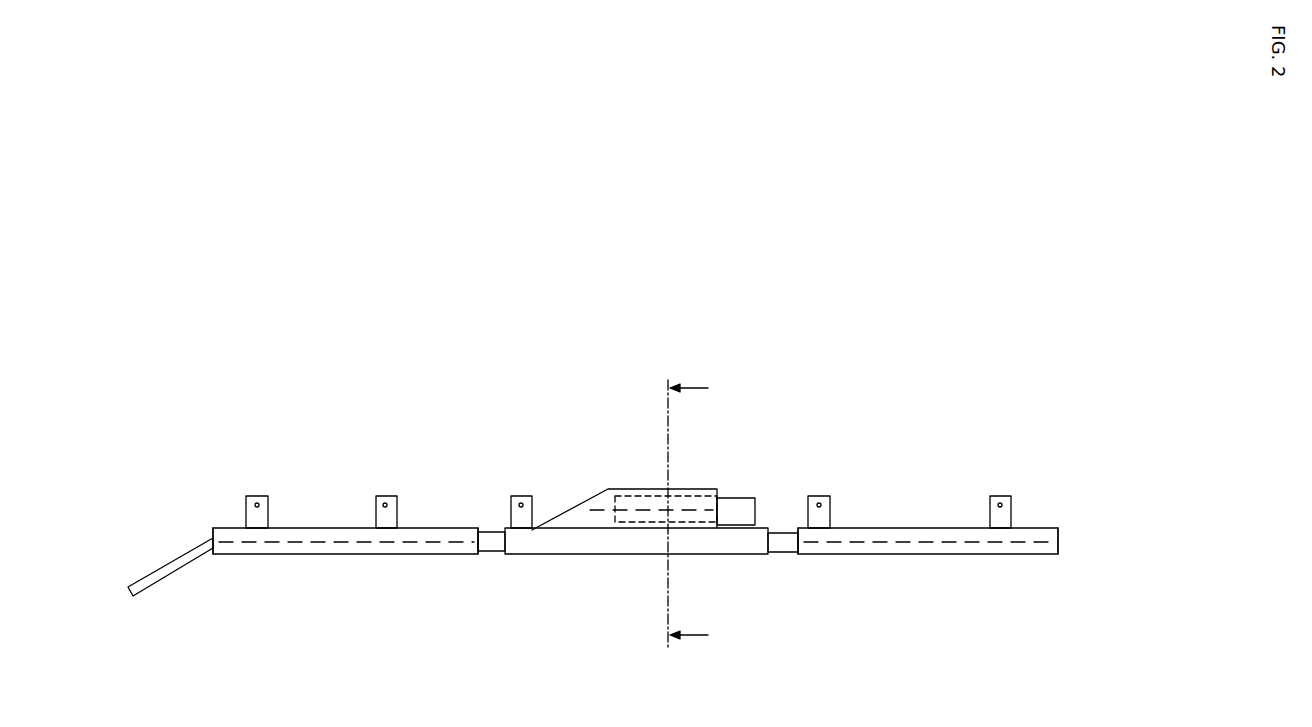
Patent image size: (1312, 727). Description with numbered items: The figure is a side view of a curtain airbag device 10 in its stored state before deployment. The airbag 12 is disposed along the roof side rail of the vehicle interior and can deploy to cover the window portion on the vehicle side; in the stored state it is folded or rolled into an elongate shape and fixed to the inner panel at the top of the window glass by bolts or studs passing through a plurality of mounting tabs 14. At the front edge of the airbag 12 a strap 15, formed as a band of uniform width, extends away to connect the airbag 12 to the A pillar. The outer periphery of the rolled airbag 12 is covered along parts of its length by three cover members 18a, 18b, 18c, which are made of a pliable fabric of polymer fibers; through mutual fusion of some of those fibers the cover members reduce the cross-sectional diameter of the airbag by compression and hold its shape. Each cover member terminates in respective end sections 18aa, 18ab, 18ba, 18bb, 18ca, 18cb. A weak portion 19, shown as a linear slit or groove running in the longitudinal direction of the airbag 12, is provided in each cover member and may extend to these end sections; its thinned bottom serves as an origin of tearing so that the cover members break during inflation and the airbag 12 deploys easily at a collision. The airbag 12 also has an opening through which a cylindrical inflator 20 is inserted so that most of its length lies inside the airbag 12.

The curtain airbag device 10 is at (872, 378).
The airbag 12 is at (785, 553).
The mounting tab 14 is at (390, 495).
The strap 15 is at (163, 563).
The cover member 18a is at (368, 555).
The end section of cover member 18aa is at (215, 545).
The end section of cover member 18ab is at (473, 542).
The cover member 18b is at (612, 555).
The end section of cover member 18ba is at (562, 513).
The end section of cover member 18bb is at (725, 495).
The cover member 18c is at (968, 558).
The end section of cover member 18ca is at (800, 547).
The end section of cover member 18cb is at (1058, 547).
The weak portion 19 is at (310, 542).
The inflator 20 is at (741, 527).